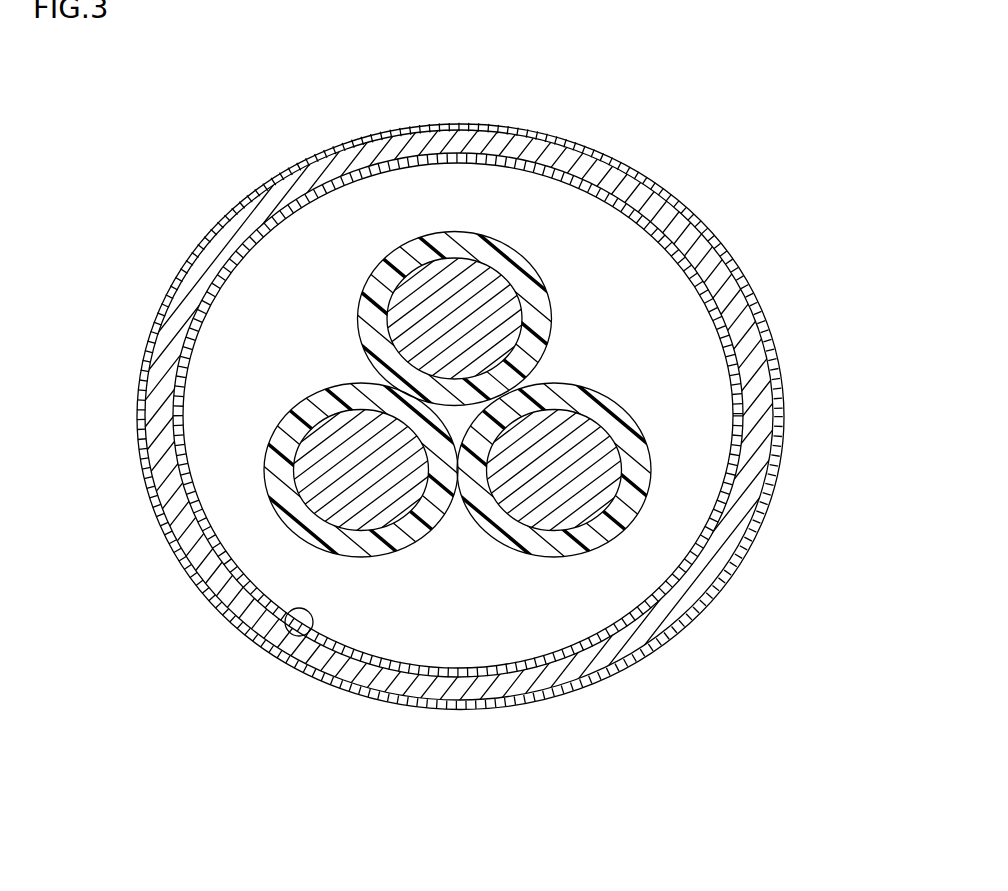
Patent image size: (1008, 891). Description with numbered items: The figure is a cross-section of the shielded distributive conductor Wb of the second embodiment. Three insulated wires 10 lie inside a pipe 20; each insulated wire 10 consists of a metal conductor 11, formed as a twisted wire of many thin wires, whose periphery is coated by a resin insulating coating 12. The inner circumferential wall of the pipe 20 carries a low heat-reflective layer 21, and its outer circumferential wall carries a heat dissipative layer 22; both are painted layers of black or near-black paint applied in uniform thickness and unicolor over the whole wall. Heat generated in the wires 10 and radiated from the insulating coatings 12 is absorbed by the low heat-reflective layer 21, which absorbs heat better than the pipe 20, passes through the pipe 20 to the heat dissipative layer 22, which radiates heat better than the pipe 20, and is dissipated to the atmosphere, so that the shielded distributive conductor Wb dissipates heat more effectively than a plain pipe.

The insulated wire 10 is at (503, 443).
The conductor 11 is at (440, 307).
The insulating coating 12 is at (377, 300).
The pipe 20 is at (703, 238).
The low heat-reflective layer 21 is at (304, 636).
The heat dissipative layer 22 is at (713, 597).
The shielded distributive conductor Wb is at (459, 436).